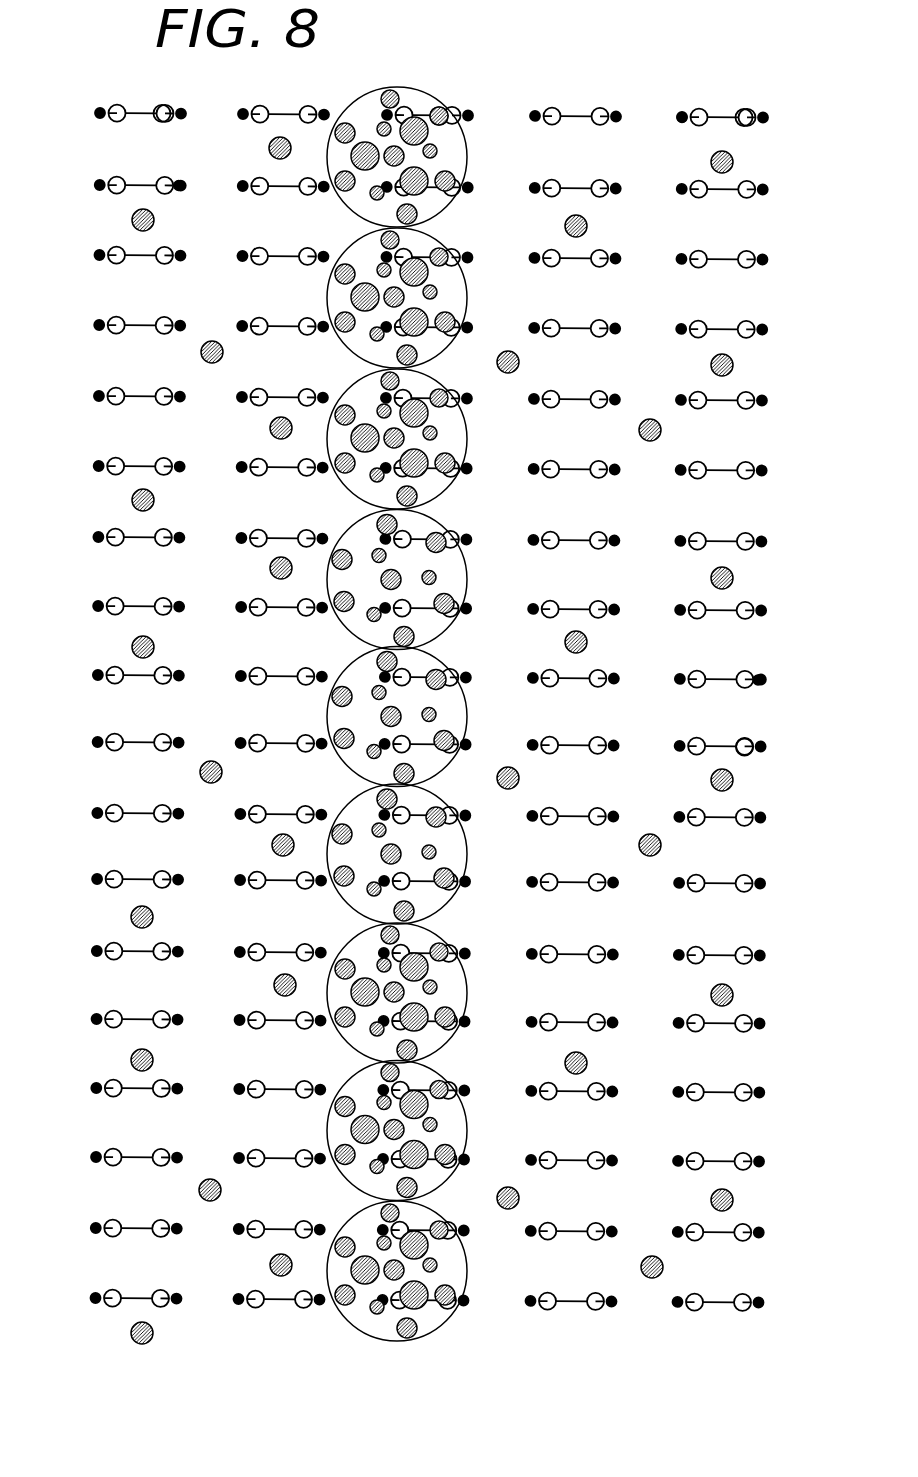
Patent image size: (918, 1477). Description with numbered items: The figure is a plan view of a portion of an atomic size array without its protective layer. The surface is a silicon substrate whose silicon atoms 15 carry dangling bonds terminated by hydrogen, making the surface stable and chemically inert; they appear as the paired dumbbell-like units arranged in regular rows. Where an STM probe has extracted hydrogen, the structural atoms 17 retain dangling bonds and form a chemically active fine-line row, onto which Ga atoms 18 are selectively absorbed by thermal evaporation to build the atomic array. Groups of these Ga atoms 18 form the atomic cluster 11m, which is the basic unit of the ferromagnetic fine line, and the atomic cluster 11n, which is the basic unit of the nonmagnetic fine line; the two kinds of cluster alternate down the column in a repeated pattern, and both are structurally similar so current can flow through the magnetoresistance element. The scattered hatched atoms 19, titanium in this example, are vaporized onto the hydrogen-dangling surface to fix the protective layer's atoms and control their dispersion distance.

The atomic cluster 11m is at (423, 93).
The atomic cluster 11n is at (379, 513).
The silicon atoms 15 is at (179, 180).
The structural atoms 17 is at (160, 123).
The Ga atoms 18 is at (442, 108).
The atoms 19 is at (733, 163).